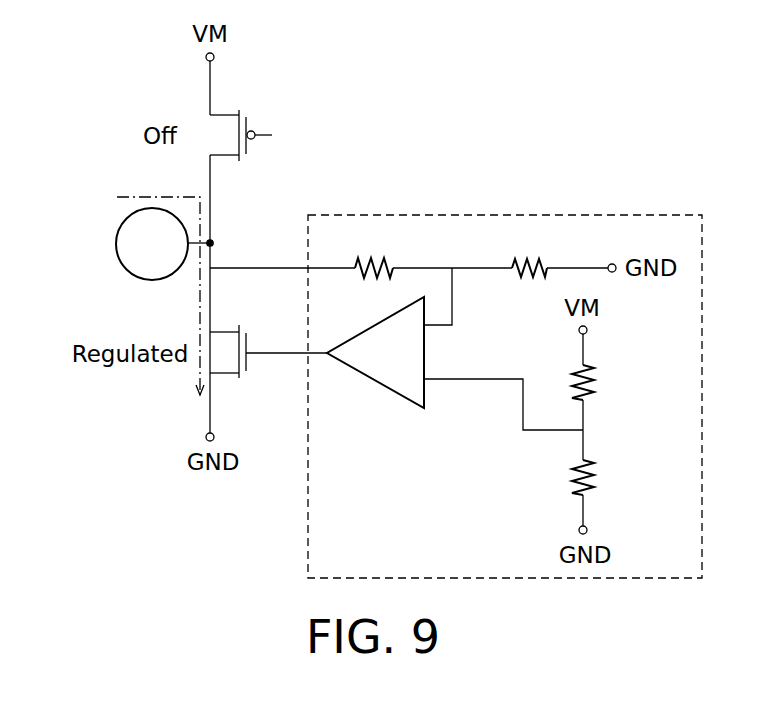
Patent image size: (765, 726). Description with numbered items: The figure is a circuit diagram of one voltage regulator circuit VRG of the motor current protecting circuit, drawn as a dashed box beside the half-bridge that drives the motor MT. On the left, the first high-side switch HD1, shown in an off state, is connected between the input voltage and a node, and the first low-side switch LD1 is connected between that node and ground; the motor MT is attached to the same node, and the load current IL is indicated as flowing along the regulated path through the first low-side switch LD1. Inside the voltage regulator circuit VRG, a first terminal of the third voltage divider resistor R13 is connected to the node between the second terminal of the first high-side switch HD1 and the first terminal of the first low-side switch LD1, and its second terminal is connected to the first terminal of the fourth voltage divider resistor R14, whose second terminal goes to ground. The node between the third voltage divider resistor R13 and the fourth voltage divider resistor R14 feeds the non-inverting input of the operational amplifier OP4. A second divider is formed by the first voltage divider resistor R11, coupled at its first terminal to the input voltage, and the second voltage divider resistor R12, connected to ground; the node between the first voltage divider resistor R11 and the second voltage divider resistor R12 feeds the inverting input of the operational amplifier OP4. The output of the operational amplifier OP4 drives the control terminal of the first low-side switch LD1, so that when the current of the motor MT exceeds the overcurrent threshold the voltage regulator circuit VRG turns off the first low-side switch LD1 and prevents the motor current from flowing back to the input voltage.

The first high-side switch HD1 is at (241, 120).
The first low-side switch LD1 is at (268, 367).
The motor MT is at (127, 260).
The load current IL is at (160, 281).
The voltage regulator circuit VRG is at (596, 213).
The first voltage divider resistor R11 is at (608, 382).
The second voltage divider resistor R12 is at (608, 477).
The third voltage divider resistor R13 is at (374, 252).
The fourth voltage divider resistor R14 is at (527, 251).
The operational amplifier OP4 is at (378, 377).